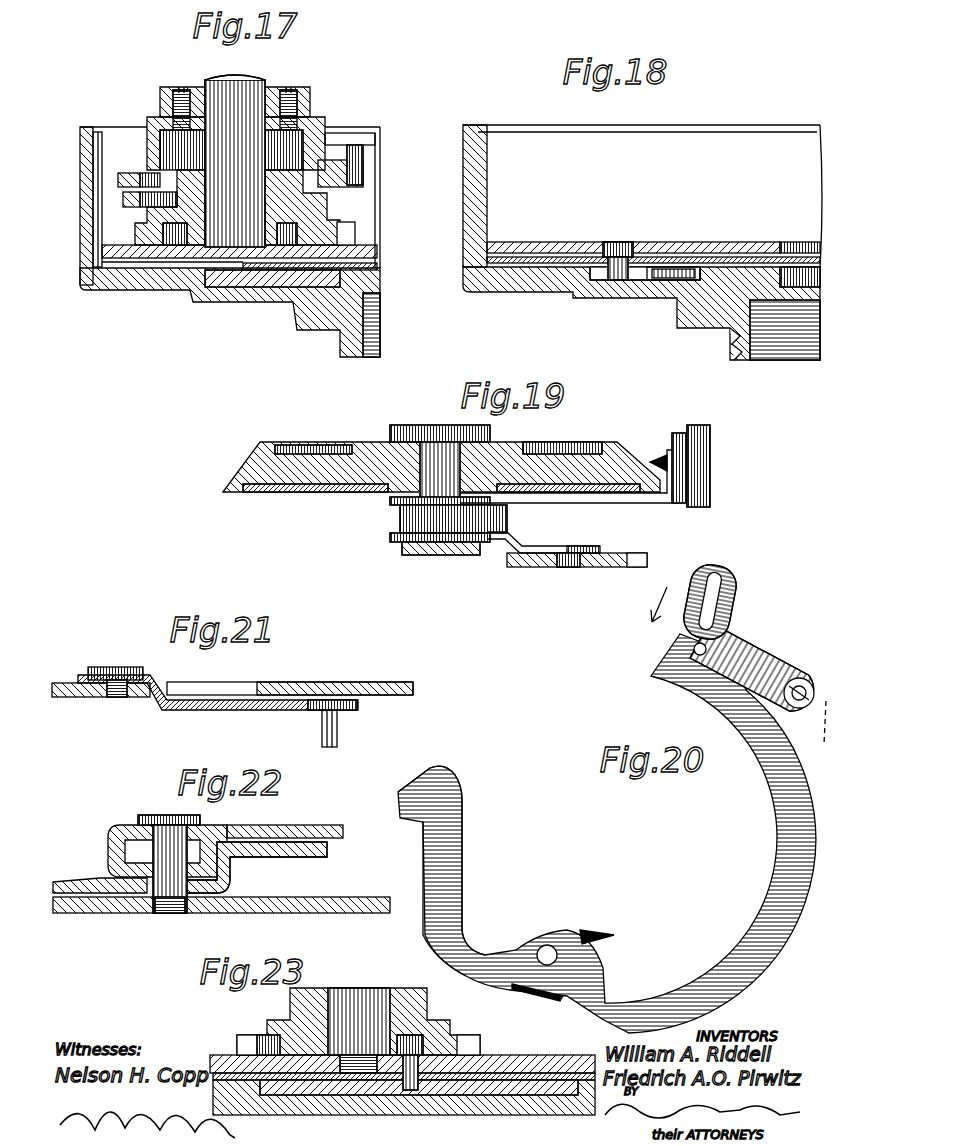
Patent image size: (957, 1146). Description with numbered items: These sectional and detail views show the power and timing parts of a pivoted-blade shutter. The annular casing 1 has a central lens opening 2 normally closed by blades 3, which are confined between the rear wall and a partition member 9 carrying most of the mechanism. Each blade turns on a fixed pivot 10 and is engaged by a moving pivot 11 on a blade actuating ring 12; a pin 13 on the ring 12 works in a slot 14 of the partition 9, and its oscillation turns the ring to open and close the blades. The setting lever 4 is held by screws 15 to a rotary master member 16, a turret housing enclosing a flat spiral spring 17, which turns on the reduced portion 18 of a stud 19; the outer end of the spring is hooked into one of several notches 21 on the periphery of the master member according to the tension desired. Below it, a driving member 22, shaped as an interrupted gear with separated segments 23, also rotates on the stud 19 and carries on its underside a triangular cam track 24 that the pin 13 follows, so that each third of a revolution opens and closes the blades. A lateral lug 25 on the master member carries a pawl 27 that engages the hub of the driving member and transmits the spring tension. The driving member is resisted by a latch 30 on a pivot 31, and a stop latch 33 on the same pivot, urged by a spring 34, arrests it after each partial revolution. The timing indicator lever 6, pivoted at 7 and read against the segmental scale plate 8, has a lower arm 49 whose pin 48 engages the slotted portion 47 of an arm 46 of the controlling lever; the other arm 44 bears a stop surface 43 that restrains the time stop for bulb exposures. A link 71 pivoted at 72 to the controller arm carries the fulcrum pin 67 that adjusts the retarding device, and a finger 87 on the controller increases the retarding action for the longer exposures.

In FIG. 17, the shutter casing 1 is at (80, 205).
In FIG. 18, the shutter casing 1 is at (487, 190).
In FIG. 18, the lens opening 2 is at (790, 245).
In FIG. 17, the blades 3 is at (298, 267).
In FIG. 18, the blades 3 is at (738, 258).
In FIG. 23, the blades 3 is at (520, 1078).
In FIG. 17, the setting lever 4 is at (308, 98).
In FIG. 19, the indicator lever 6 is at (710, 455).
In FIG. 19, the pivot 7 is at (433, 440).
In FIG. 19, the segmental scale plate 8 is at (595, 443).
In FIG. 17, the partition member 9 is at (377, 250).
In FIG. 18, the partition member 9 is at (683, 243).
In FIG. 22, the partition member 9 is at (137, 913).
In FIG. 23, the partition member 9 is at (220, 1055).
In FIG. 18, the fixed pivot 10 is at (672, 278).
In FIG. 18, the moving pivot 11 is at (620, 250).
In FIG. 17, the blade actuating ring 12 is at (240, 280).
In FIG. 18, the blade actuating ring 12 is at (605, 278).
In FIG. 23, the blade actuating ring 12 is at (535, 1087).
In FIG. 23, the pin 13 is at (415, 1052).
In FIG. 18, the slot 14 is at (604, 242).
In FIG. 17, the screws 15 is at (288, 90).
In FIG. 17, the master member 16 is at (322, 123).
In FIG. 17, the spring 17 is at (160, 127).
In FIG. 17, the reduced portion 18 is at (240, 86).
In FIG. 17, the stud 19 is at (212, 172).
In FIG. 23, the stud 19 is at (370, 990).
In FIG. 20, the notches 21 is at (672, 647).
In FIG. 17, the driving member 22 is at (305, 217).
In FIG. 23, the driving member 22 is at (290, 1010).
In FIG. 17, the gear segments 23 is at (350, 222).
In FIG. 23, the gear segments 23 is at (478, 1043).
In FIG. 17, the triangular cam track 24 is at (175, 236).
In FIG. 23, the triangular cam track 24 is at (420, 1040).
In FIG. 17, the lateral lug 25 is at (363, 160).
In FIG. 17, the pawl 27 is at (363, 180).
In FIG. 17, the latch 30 is at (133, 207).
In FIG. 22, the latch 30 is at (310, 857).
In FIG. 22, the pivot 31 is at (160, 822).
In FIG. 17, the stop latch 33 is at (128, 172).
In FIG. 22, the stop latch 33 is at (327, 825).
In FIG. 22, the spring 34 is at (108, 845).
In FIG. 20, the stop surface 43 is at (415, 780).
In FIG. 20, the arm 44 is at (463, 910).
In FIG. 20, the arm 46 is at (788, 805).
In FIG. 21, the arm 46 is at (320, 683).
In FIG. 19, the slotted portion 47 is at (590, 567).
In FIG. 20, the slotted portion 47 is at (718, 583).
In FIG. 19, the pin 48 is at (567, 568).
In FIG. 19, the lower arm 49 is at (510, 535).
In FIG. 20, the fulcrum pin 67 is at (699, 656).
In FIG. 21, the fulcrum pin 67 is at (338, 727).
In FIG. 20, the link 71 is at (740, 655).
In FIG. 21, the link 71 is at (228, 706).
In FIG. 20, the pivot 72 is at (801, 680).
In FIG. 21, the pivot 72 is at (120, 667).
In FIG. 20, the finger 87 is at (602, 932).